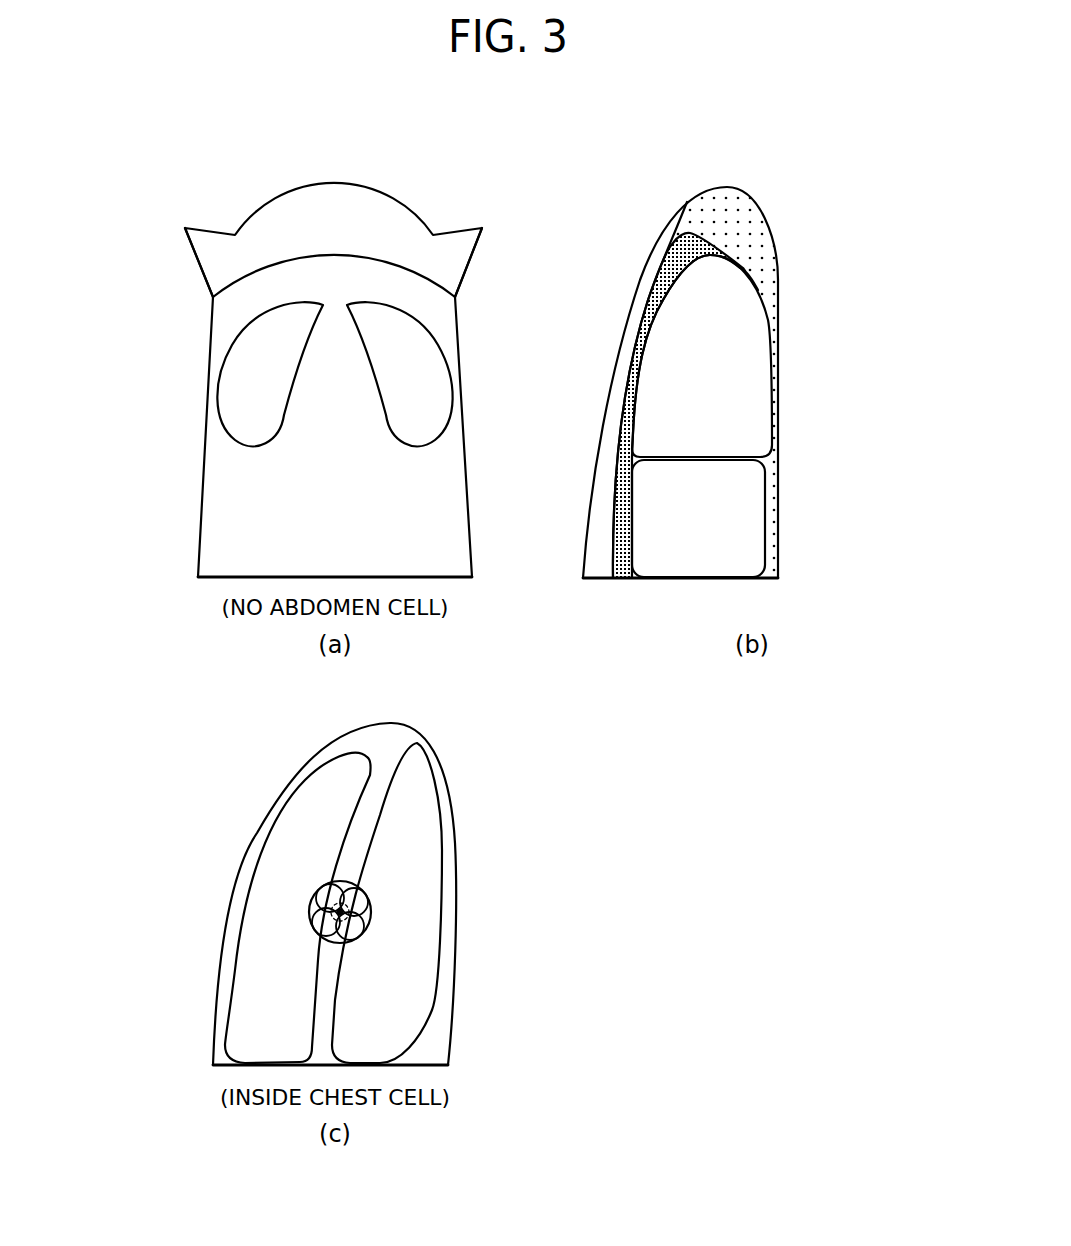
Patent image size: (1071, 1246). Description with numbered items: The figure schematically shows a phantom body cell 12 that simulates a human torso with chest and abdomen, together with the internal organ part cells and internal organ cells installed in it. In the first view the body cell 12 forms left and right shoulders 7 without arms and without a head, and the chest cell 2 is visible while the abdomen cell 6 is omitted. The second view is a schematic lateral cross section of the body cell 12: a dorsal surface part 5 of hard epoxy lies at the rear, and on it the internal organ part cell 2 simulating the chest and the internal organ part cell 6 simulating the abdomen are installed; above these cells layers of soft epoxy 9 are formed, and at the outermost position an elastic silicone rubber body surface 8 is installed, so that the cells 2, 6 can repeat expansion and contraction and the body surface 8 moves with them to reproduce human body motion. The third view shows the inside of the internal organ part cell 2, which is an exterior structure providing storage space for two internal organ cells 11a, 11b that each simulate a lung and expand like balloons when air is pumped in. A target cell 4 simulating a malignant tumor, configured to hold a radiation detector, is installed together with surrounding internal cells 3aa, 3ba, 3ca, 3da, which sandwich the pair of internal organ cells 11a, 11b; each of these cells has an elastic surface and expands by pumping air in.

The internal organ part cell 2 is at (232, 377).
The internal cell 3aa is at (362, 898).
The internal cell 3ba is at (357, 937).
The internal cell 3ca is at (313, 932).
The internal cell 3da is at (332, 888).
The target cell 4 is at (353, 911).
The dorsal surface part 5 is at (747, 202).
The abdomen cell 6 is at (755, 488).
The shoulder 7 is at (190, 243).
The body surface 8 is at (638, 276).
The soft epoxy 9 is at (690, 238).
The internal organ cell 11a is at (433, 845).
The internal organ cell 11b is at (263, 863).
The body cell 12 is at (130, 203).